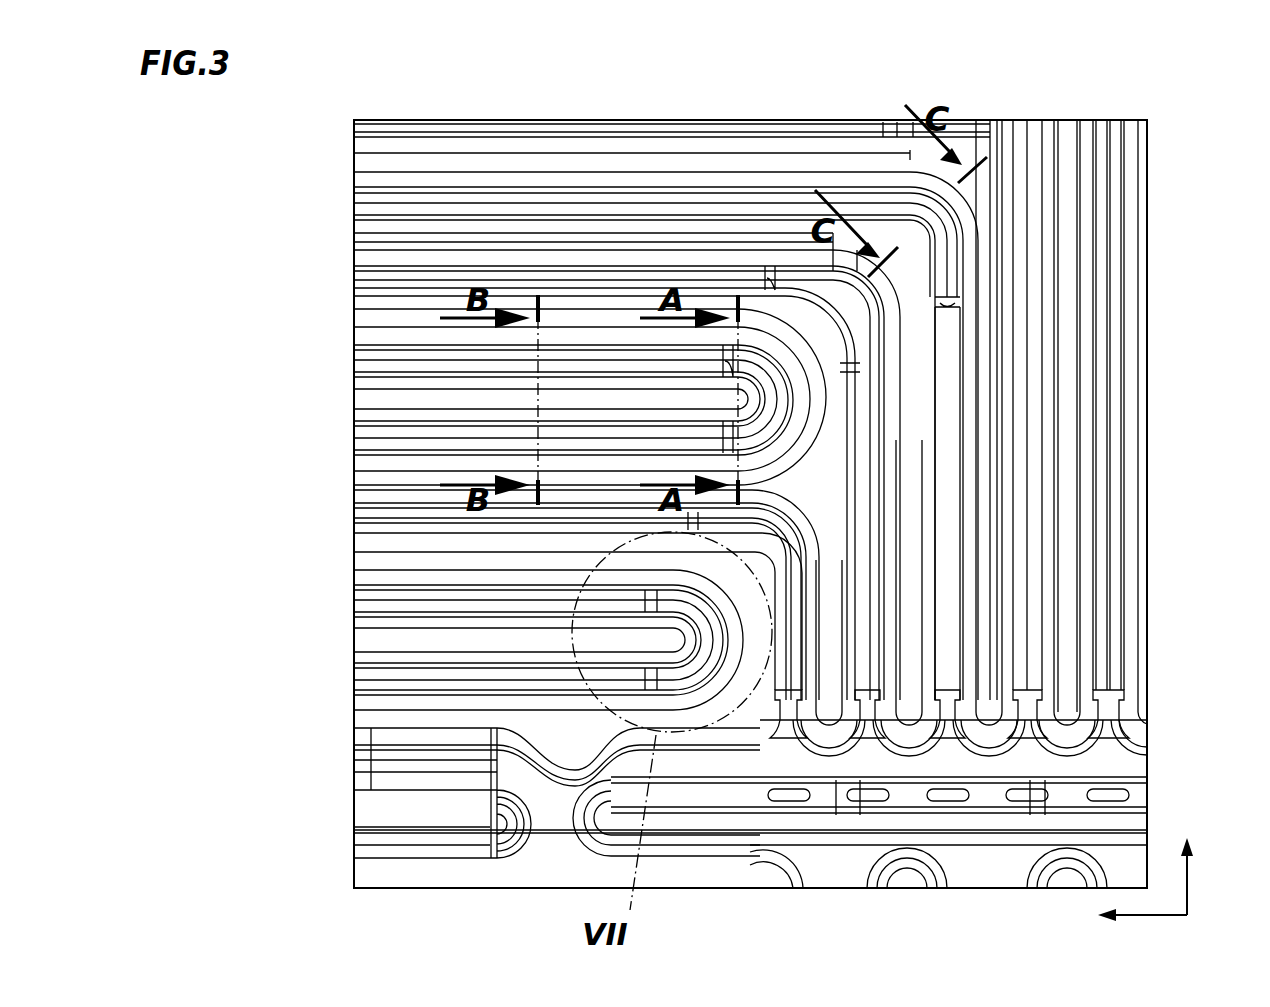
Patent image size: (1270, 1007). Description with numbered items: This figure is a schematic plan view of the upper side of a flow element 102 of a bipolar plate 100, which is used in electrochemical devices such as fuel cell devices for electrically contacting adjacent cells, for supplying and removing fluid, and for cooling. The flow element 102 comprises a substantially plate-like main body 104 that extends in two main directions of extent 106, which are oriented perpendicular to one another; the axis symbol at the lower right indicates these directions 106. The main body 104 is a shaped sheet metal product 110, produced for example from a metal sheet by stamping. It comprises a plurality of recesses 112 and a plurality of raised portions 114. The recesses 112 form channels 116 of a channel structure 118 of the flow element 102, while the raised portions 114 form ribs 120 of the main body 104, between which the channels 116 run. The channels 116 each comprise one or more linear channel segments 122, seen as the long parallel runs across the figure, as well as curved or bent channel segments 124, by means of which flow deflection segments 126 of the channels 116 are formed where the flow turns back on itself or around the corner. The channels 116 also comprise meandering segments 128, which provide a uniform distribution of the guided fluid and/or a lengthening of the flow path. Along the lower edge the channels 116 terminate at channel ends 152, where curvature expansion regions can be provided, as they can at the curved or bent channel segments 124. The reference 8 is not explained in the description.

The heat exchanger 8 is at (1166, 113).
The bipolar plate 100 is at (532, 98).
The flow element 102 is at (622, 100).
The main body 104 is at (857, 120).
The main directions of extent 106 is at (1187, 915).
The shaped sheet metal product 110 is at (985, 120).
The recesses 112 is at (525, 280).
The raised portions 114 is at (378, 163).
The channels 116 is at (365, 518).
The channel structure 118 is at (459, 775).
The ribs 120 is at (378, 403).
The linear channel segments 122 is at (765, 240).
The curved or bent channel segments 124 is at (785, 388).
The flow deflection segments 126 is at (785, 412).
The meandering segments 128 is at (623, 300).
The channel ends 152 is at (1112, 748).